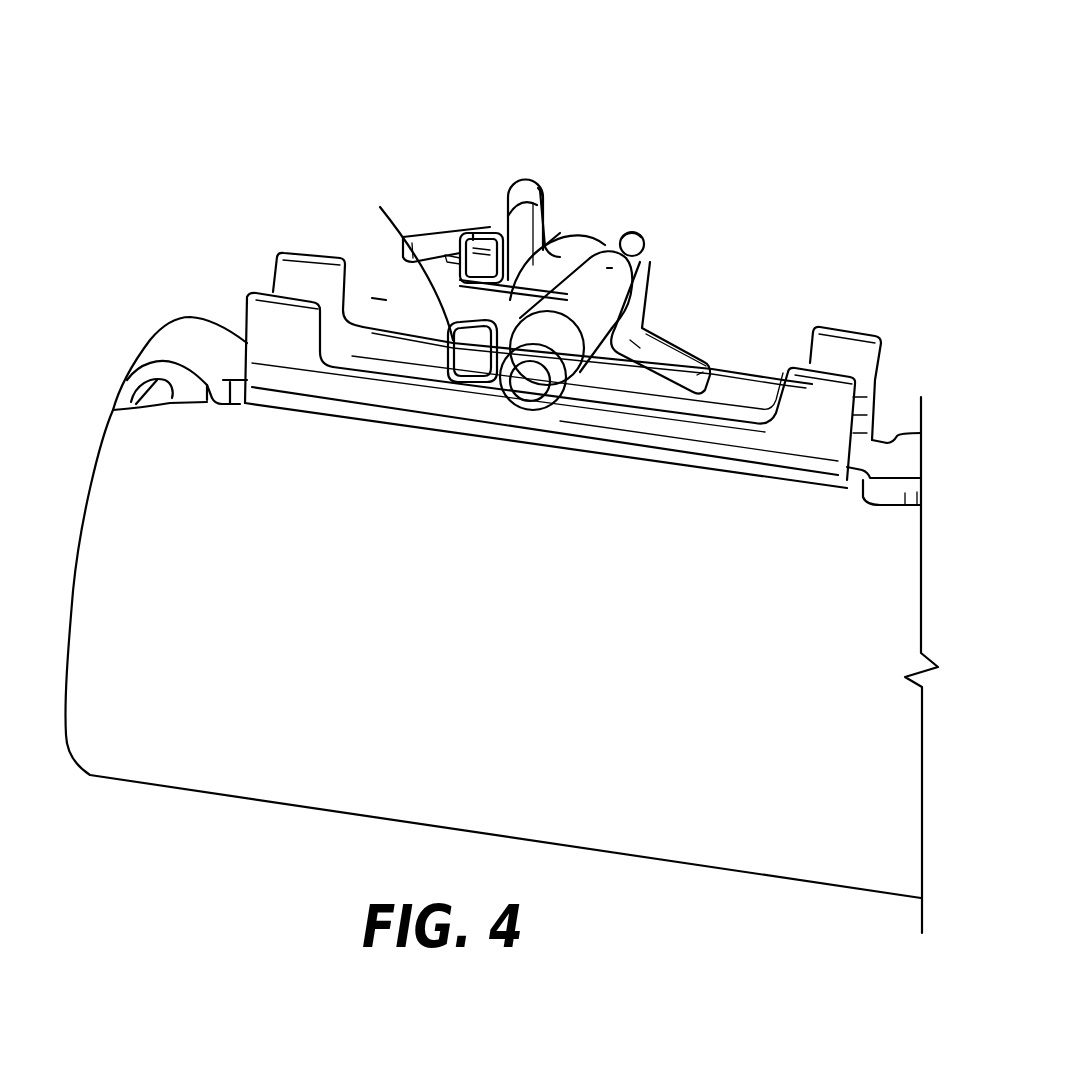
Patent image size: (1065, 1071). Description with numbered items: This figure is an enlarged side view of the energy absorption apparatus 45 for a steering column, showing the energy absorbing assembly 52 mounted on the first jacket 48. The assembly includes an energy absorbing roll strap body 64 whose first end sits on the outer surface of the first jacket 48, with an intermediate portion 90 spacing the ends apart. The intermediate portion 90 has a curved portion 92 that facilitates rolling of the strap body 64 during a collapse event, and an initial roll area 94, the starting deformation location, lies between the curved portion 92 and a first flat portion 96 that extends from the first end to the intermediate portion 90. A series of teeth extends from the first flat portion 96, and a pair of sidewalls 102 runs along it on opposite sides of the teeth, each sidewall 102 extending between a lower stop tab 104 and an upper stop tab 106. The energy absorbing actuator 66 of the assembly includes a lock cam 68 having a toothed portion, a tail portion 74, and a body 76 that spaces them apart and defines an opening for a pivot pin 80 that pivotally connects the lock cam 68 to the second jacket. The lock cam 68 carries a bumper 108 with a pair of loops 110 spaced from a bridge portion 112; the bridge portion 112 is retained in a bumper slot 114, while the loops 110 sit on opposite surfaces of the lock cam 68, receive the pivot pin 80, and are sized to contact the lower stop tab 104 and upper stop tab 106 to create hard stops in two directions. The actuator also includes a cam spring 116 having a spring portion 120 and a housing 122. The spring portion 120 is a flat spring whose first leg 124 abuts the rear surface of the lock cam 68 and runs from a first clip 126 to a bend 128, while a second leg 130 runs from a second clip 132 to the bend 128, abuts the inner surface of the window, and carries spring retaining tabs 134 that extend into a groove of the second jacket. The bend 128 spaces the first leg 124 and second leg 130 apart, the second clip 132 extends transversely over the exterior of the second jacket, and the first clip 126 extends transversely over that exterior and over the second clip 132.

The latch assembly 45 is at (958, 67).
The first jacket 48 is at (922, 620).
The energy absorbing assembly 52 is at (702, 175).
The strap body 64 is at (920, 465).
The energy absorbing actuator 66 is at (566, 299).
The lock cam 68 is at (521, 184).
The tail portion 74 is at (539, 190).
The body 76 is at (638, 331).
The pivot pin 80 is at (525, 390).
The intermediate portion 90 is at (159, 319).
The curved portion 92 is at (150, 343).
The initial roll area 94 is at (205, 333).
The first flat portion 96 is at (738, 392).
The sidewalls 102 is at (365, 320).
The lower stop tab 104 is at (313, 265).
The upper stop tab 106 is at (862, 336).
The bumper 108 is at (662, 182).
The loops 110 is at (583, 373).
The bridge portion 112 is at (607, 268).
The bumper slot 114 is at (640, 233).
The cam spring 116 is at (466, 183).
The spring portion 120 is at (462, 405).
The housing 122 is at (509, 282).
The first leg 124 is at (450, 353).
The first clip 126 is at (473, 233).
The bend 128 is at (474, 380).
The second leg 130 is at (378, 298).
The second clip 132 is at (452, 330).
The spring retaining tabs 134 is at (433, 258).